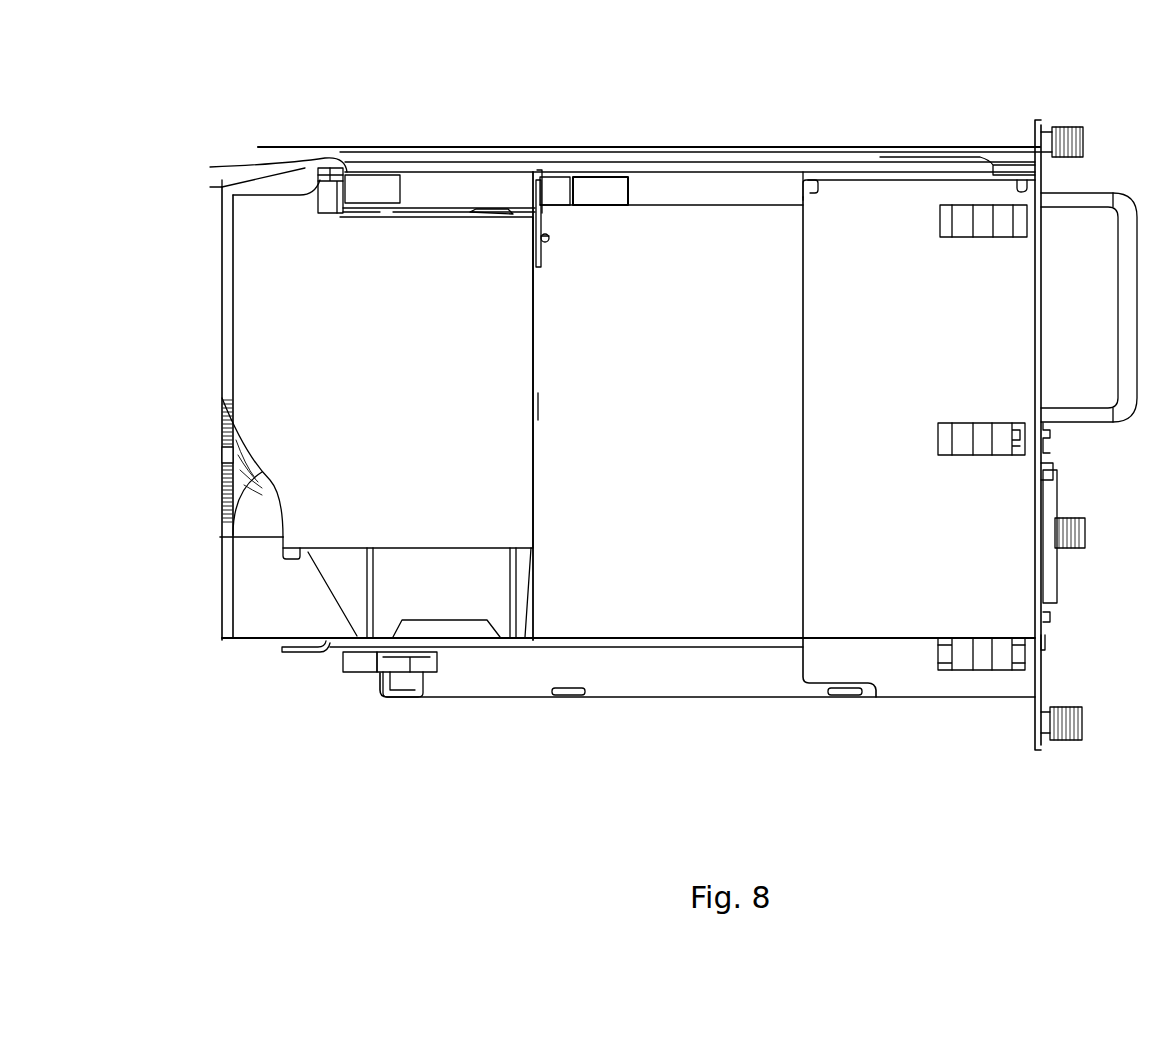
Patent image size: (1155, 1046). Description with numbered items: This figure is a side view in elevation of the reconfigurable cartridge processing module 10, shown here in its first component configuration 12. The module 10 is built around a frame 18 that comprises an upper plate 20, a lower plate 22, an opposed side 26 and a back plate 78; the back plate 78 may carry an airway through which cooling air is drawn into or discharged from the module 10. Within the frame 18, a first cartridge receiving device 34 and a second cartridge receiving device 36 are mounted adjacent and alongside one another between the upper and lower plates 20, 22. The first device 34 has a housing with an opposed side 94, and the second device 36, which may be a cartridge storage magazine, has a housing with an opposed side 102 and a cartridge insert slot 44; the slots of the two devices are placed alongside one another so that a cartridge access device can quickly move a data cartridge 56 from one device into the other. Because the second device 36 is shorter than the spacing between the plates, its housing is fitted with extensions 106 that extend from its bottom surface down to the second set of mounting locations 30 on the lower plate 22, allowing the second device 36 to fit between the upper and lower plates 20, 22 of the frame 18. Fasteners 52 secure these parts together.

The reconfigurable cartridge processing module 10 is at (203, 53).
The first component configuration 12 is at (198, 117).
The frame 18 is at (1004, 149).
The upper plate 20 is at (960, 148).
The lower plate 22 is at (725, 700).
The side 26 is at (910, 317).
The second set of mounting locations 30 is at (318, 180).
The first cartridge receiving device 34 is at (217, 583).
The second cartridge receiving device 36 is at (537, 305).
The cartridge insert slot 44 is at (322, 527).
The fasteners 52 is at (212, 167).
The data cartridge 56 is at (222, 477).
The back plate 78 is at (1043, 338).
The side 94 is at (690, 392).
The side 102 is at (420, 362).
The extensions 106 is at (532, 592).